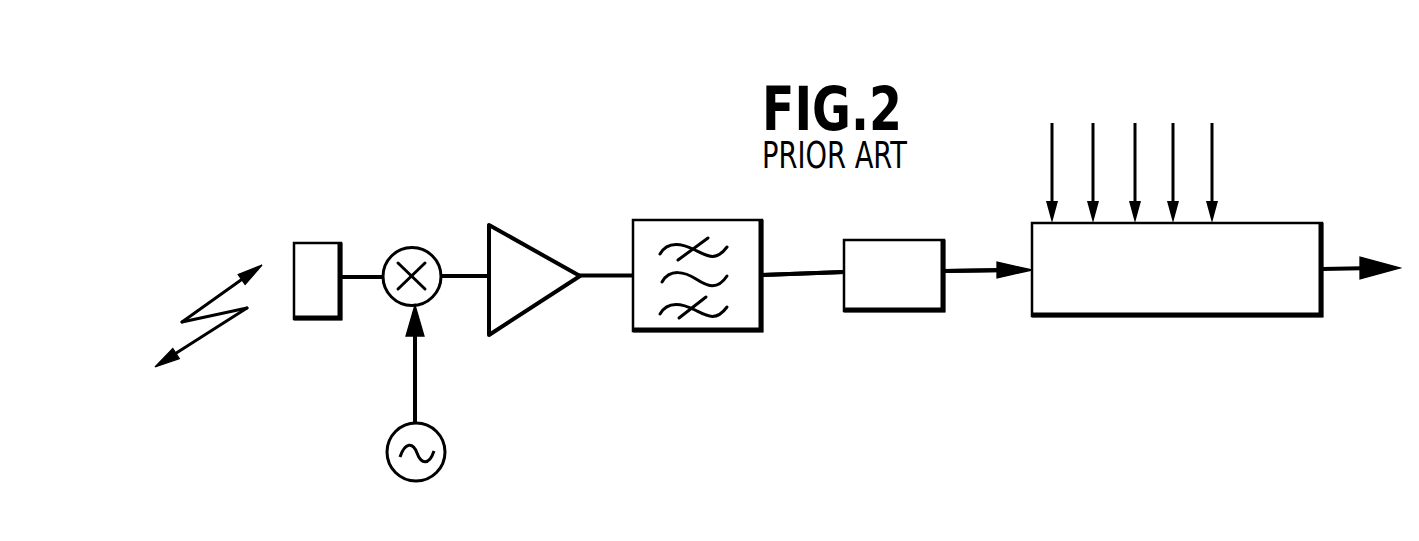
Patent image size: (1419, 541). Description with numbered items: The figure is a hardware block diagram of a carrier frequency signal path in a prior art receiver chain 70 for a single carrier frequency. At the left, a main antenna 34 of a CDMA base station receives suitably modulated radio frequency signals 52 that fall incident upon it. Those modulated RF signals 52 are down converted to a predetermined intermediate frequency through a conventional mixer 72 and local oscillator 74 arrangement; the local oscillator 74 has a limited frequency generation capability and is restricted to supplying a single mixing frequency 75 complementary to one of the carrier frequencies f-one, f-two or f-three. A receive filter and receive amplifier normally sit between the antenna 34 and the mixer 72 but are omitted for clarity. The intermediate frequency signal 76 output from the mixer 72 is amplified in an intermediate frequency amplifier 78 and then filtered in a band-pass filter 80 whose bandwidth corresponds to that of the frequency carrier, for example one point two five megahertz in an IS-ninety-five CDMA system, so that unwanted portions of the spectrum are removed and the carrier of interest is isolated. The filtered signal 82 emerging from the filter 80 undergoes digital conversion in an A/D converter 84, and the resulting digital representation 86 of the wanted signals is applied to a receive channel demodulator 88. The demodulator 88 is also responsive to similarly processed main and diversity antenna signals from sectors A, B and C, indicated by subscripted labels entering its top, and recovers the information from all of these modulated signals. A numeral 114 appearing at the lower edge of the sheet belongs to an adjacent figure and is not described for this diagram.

The main antenna 34 is at (316, 243).
The modulated radio frequency signals 52 is at (212, 332).
The receiver chain 70 is at (552, 150).
The mixer 72 is at (411, 248).
The local oscillator 74 is at (448, 453).
The mixing frequency 75 is at (410, 378).
The intermediate frequency signal 76 is at (465, 282).
The intermediate frequency amplifier 78 is at (533, 247).
The band-pass filter 80 is at (698, 218).
The filtered signal 82 is at (800, 277).
The A/D converter 84 is at (925, 295).
The digital representation 86 is at (987, 273).
The receive channel demodulator 88 is at (1142, 318).
The element of adjacent figure (partially shown) 114 is at (1155, 540).